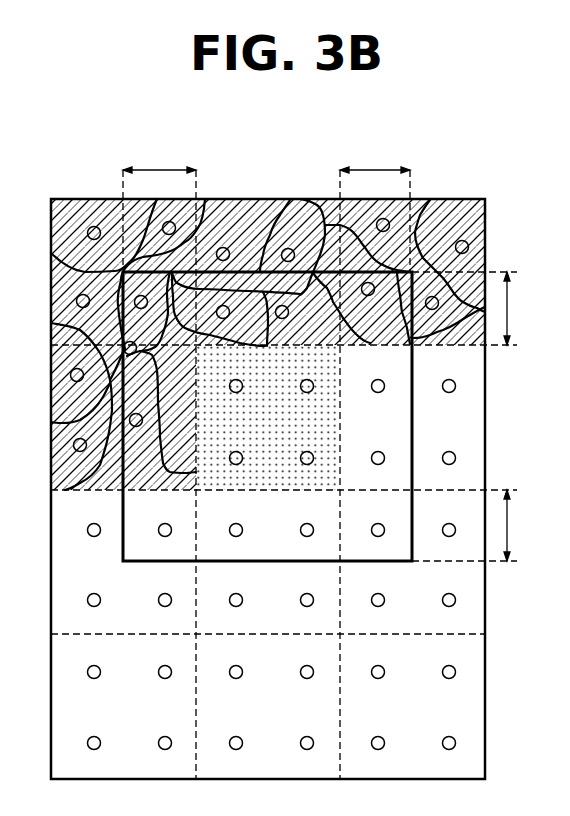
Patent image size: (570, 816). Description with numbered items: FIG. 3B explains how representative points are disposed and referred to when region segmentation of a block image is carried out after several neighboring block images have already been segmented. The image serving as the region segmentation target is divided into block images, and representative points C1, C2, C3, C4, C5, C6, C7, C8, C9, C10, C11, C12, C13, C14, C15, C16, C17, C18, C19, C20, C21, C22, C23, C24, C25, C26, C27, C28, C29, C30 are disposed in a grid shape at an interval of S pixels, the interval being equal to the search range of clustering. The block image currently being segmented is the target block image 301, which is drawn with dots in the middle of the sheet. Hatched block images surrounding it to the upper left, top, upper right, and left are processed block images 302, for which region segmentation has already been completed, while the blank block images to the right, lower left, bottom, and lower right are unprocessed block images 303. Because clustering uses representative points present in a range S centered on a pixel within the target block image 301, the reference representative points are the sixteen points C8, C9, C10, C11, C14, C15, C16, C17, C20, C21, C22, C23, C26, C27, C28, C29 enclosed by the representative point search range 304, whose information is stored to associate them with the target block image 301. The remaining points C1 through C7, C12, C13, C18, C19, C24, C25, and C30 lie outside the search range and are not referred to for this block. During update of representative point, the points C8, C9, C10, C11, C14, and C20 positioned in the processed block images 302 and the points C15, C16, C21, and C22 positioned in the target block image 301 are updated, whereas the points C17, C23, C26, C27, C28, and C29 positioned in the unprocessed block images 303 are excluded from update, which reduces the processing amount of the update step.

The target block image 301 is at (325, 397).
The processed block images 302 is at (104, 212).
The unprocessed block images 303 is at (462, 470).
The representative point search range 304 is at (406, 563).
The representative point C1 is at (82, 226).
The representative point C2 is at (158, 237).
The representative point C3 is at (222, 243).
The representative point C4 is at (290, 244).
The representative point C5 is at (385, 238).
The representative point C6 is at (462, 236).
The representative point C7 is at (75, 291).
The reference representative point C8 is at (142, 314).
The reference representative point C9 is at (236, 313).
The reference representative point C10 is at (289, 324).
The reference representative point C11 is at (369, 302).
The representative point C12 is at (432, 293).
The representative point C13 is at (76, 386).
The reference representative point C14 is at (141, 360).
The reference representative point C15 is at (237, 374).
The reference representative point C16 is at (307, 374).
The reference representative point C17 is at (378, 374).
The representative point C18 is at (449, 374).
The representative point C19 is at (75, 457).
The reference representative point C20 is at (142, 432).
The reference representative point C21 is at (236, 446).
The reference representative point C22 is at (307, 446).
The reference representative point C23 is at (378, 446).
The representative point C24 is at (449, 446).
The representative point C25 is at (94, 517).
The reference representative point C26 is at (165, 517).
The reference representative point C27 is at (236, 517).
The reference representative point C28 is at (307, 517).
The reference representative point C29 is at (378, 517).
The representative point C30 is at (449, 517).